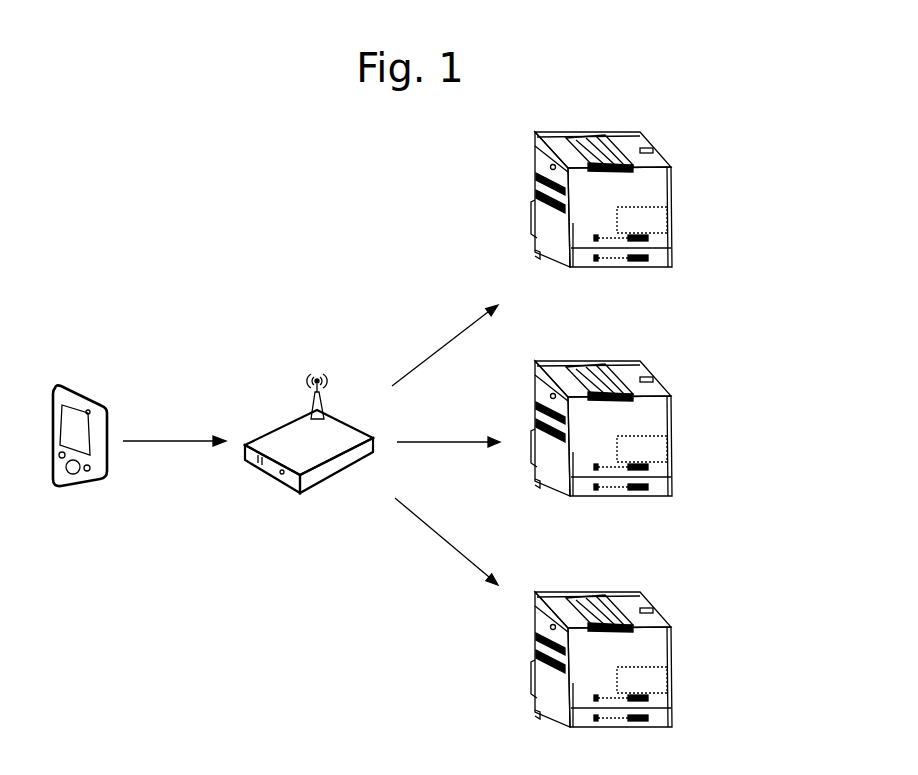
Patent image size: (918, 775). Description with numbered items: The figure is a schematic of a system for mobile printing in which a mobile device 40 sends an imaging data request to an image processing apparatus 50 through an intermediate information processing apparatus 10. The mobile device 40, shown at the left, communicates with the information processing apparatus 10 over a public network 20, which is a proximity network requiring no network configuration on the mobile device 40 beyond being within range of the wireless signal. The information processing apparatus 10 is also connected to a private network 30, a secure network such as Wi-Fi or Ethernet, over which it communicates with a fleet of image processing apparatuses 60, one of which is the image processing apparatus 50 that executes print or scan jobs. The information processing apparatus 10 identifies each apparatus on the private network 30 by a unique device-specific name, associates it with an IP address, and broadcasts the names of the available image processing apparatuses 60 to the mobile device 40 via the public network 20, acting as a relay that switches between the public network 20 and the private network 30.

The information processing apparatus 10 is at (267, 482).
The public network 20 is at (168, 440).
The private network 30 is at (440, 348).
The mobile device 40 is at (90, 393).
The image processing apparatus 50 is at (543, 362).
The image processing apparatuses 60 is at (688, 188).